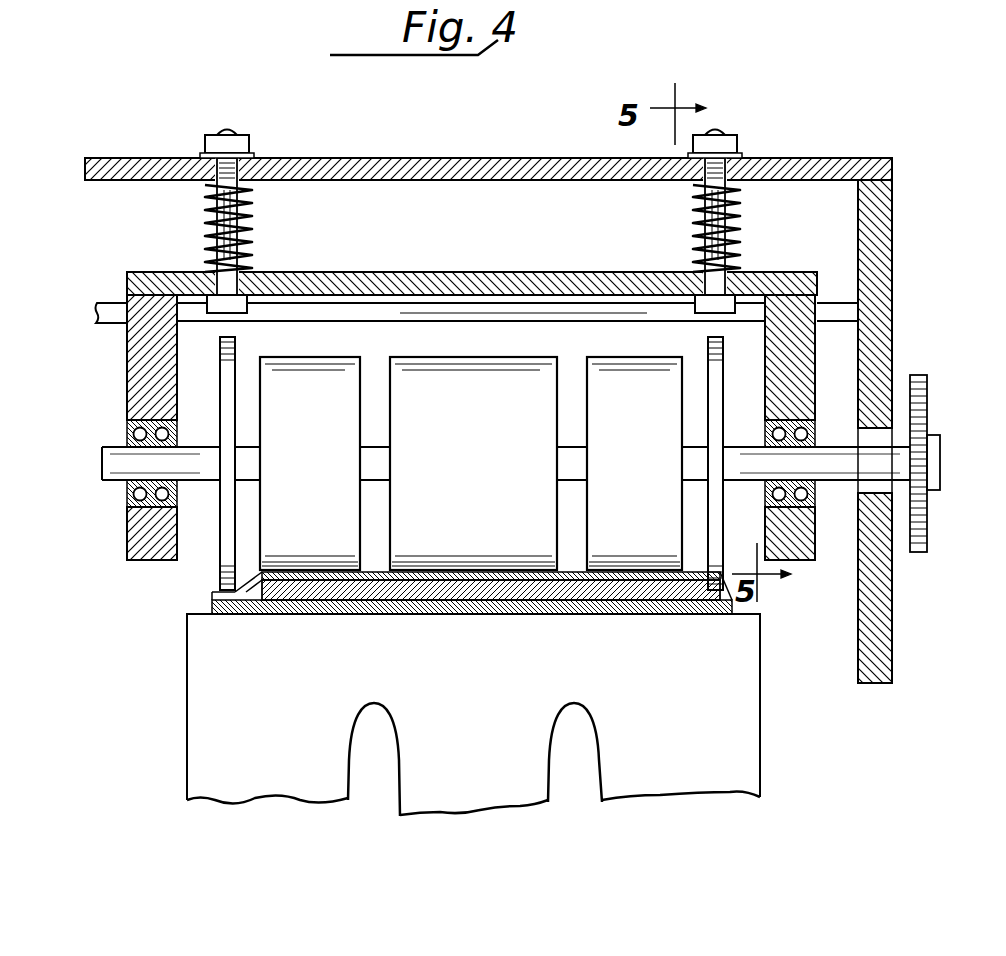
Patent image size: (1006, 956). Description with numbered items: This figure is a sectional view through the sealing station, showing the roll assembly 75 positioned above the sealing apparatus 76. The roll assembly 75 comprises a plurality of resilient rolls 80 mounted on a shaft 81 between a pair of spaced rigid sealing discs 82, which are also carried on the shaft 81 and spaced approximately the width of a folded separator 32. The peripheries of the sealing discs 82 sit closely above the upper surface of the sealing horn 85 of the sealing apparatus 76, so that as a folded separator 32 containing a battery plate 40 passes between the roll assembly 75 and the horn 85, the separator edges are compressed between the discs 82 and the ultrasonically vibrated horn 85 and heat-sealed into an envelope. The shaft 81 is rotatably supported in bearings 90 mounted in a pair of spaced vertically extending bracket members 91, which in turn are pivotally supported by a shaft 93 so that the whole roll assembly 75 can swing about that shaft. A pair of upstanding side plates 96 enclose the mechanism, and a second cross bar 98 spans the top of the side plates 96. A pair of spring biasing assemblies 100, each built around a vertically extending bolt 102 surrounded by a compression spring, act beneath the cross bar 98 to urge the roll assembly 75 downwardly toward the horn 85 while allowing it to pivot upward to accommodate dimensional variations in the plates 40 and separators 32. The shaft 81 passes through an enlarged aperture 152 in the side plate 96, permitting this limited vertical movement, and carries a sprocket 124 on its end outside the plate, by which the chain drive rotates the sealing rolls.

The second cross bar 98 is at (412, 170).
The bolt 102 is at (226, 130).
The spring biasing assembly 100 is at (263, 223).
The side plate 96 is at (872, 213).
The shaft 93 is at (830, 302).
The bracket member 91 is at (135, 388).
The bearing 90 is at (817, 433).
The shaft 81 is at (835, 478).
The sprocket 124 is at (927, 413).
The enlarged aperture 152 is at (873, 490).
The resilient roll 80 is at (337, 378).
The sealing disc 82 is at (713, 408).
The roll assembly 75 is at (495, 346).
The folded separator 32 is at (480, 582).
The battery plate 40 is at (568, 600).
The sealing apparatus 76 is at (770, 733).
The sealing horn 85 is at (640, 772).